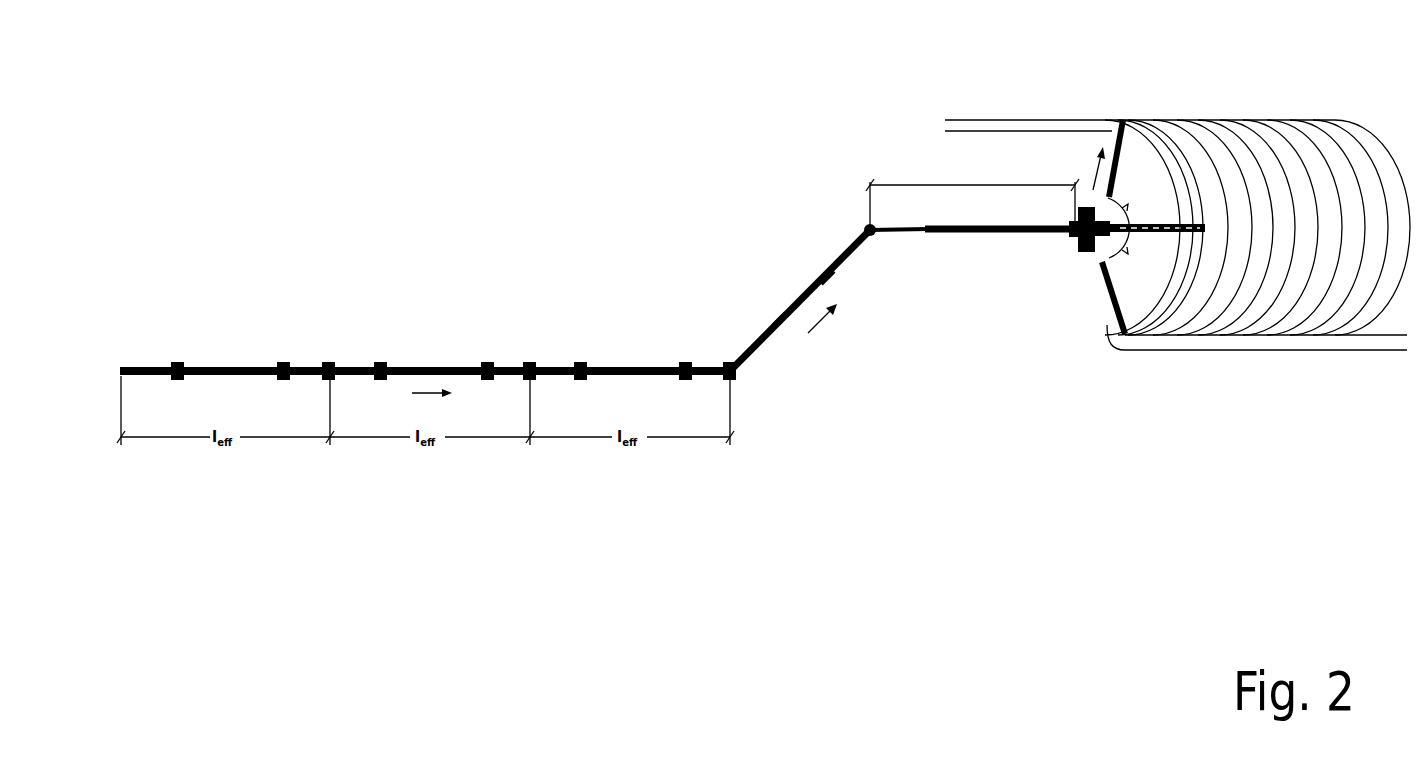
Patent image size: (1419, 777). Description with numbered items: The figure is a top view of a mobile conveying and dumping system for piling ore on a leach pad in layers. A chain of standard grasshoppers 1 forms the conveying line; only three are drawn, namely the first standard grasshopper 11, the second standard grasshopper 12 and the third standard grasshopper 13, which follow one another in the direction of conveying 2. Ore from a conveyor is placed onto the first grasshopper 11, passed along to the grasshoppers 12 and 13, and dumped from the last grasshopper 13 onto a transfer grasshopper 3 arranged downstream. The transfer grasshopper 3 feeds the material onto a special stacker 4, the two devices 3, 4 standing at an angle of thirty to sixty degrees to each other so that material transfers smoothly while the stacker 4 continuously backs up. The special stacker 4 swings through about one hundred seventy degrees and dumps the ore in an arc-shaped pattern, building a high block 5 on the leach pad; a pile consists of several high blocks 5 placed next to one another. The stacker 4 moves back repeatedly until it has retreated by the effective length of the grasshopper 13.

The standard grasshopper 1 is at (428, 334).
The first standard grasshopper 11 is at (222, 366).
The second standard grasshopper 12 is at (427, 367).
The third standard grasshopper 13 is at (637, 367).
The direction of conveying 2 is at (758, 281).
The transfer grasshopper 3 is at (799, 303).
The special stacker 4 is at (985, 236).
The high block 5 is at (1236, 126).